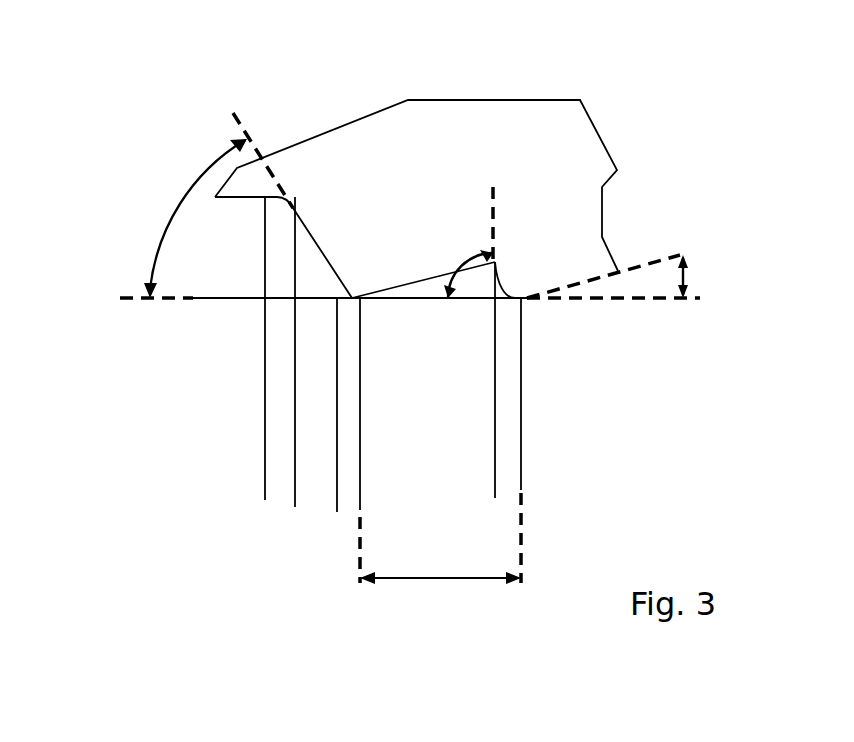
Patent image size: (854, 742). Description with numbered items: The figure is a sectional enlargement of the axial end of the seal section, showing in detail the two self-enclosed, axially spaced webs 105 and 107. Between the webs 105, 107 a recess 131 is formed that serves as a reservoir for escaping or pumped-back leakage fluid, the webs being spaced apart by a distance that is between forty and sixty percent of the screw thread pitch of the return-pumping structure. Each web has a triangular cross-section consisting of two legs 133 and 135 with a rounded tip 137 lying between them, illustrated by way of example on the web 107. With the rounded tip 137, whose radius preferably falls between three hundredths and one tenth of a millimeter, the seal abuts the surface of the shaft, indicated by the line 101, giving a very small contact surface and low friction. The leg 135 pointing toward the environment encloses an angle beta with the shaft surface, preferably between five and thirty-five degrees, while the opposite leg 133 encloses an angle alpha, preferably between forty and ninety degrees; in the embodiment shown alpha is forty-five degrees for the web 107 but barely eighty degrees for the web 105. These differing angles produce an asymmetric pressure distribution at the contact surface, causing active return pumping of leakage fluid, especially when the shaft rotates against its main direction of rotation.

The line 101 is at (234, 298).
The web 105 is at (521, 398).
The web 107 is at (350, 435).
The recess 131 is at (456, 413).
The leg 133 is at (317, 253).
The leg 135 is at (583, 278).
The rounded tip 137 is at (352, 300).